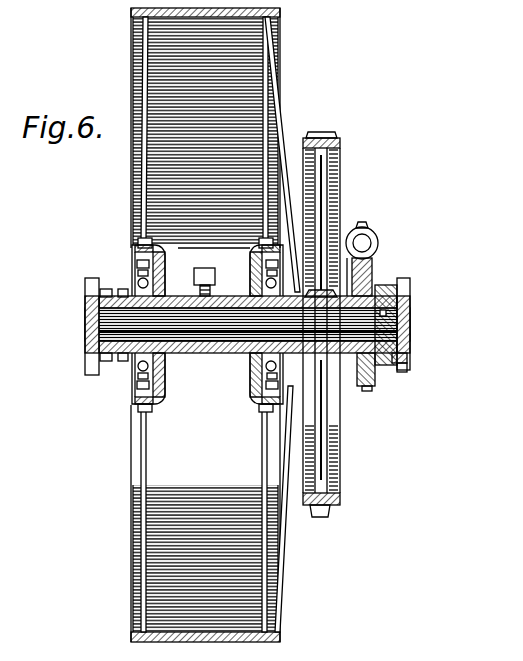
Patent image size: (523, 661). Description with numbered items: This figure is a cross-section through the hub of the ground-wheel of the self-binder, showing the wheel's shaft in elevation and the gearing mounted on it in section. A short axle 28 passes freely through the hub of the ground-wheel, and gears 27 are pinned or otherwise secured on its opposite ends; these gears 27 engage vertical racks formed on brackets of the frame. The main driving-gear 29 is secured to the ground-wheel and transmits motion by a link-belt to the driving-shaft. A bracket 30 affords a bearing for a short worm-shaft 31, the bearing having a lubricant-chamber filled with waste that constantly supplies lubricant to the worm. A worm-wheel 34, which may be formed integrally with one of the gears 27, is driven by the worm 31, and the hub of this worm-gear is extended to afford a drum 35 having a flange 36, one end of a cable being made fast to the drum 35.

The gears 27 is at (87, 279).
The short axle 28 is at (227, 327).
The main driving-gear 29 is at (340, 178).
The bracket 30 is at (366, 230).
The worm-shaft 31 is at (364, 246).
The worm-wheel 34 is at (375, 384).
The drum 35 is at (390, 370).
The flange 36 is at (395, 302).